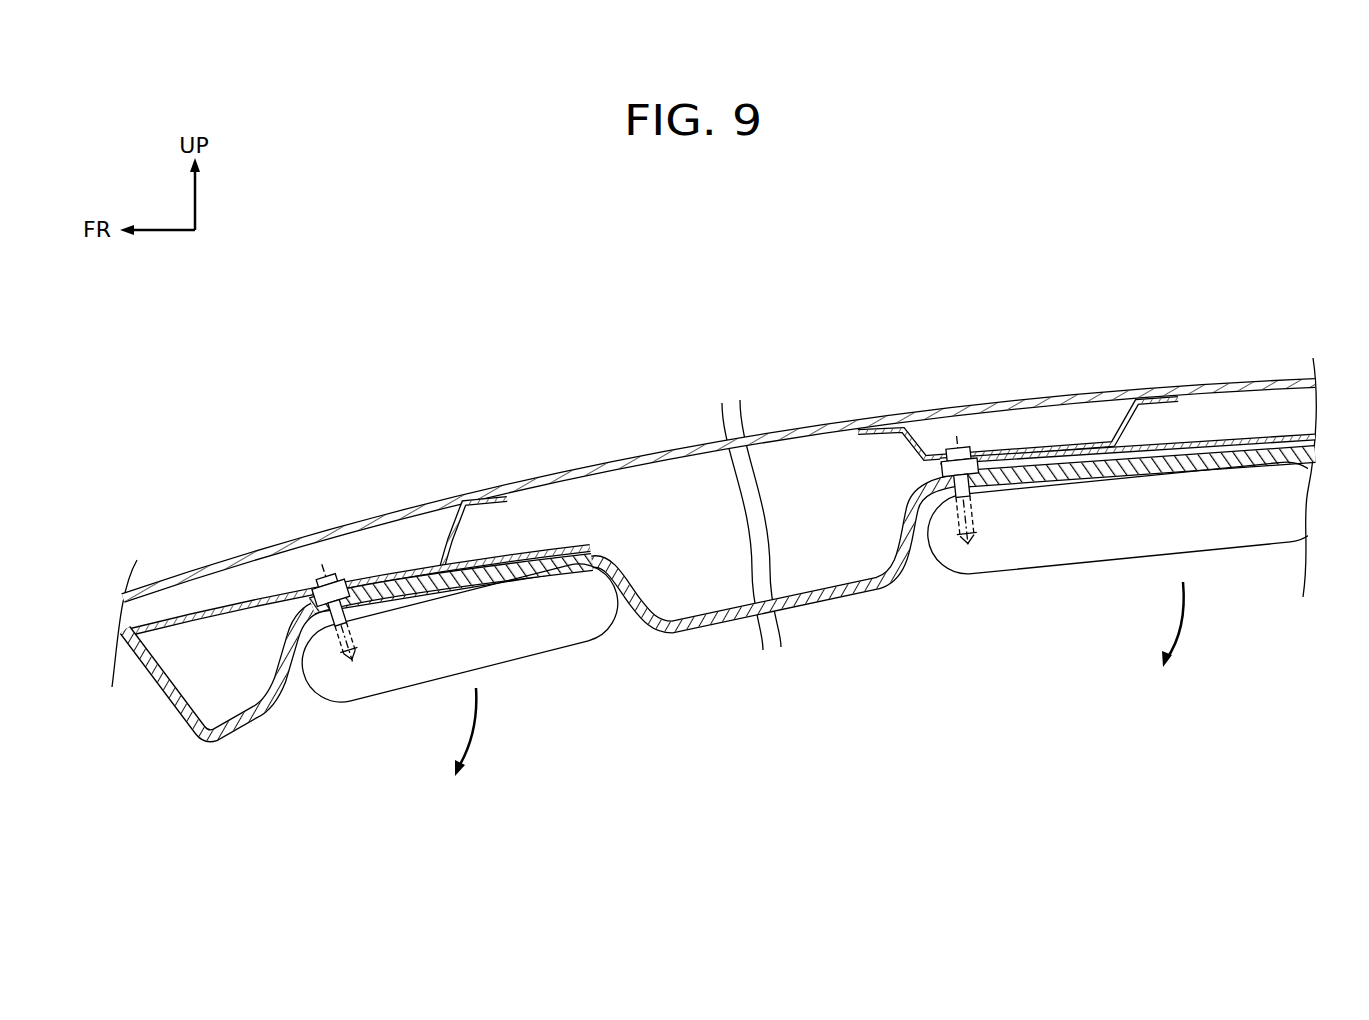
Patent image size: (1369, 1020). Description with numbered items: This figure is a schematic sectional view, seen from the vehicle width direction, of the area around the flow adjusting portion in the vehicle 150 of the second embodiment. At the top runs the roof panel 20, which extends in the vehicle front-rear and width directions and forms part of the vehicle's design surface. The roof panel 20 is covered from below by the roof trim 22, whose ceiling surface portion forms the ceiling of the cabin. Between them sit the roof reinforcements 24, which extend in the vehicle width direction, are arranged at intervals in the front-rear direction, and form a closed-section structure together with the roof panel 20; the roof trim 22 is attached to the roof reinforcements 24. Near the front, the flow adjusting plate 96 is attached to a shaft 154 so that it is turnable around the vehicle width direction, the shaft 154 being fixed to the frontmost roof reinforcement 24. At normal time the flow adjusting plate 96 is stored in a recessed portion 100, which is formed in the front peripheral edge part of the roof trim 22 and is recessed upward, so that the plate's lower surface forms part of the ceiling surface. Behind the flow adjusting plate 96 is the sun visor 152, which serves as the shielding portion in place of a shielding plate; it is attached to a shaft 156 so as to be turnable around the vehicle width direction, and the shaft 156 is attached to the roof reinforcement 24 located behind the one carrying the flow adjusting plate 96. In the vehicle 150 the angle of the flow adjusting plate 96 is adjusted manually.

The vehicle 150 is at (1000, 272).
The roof panel 20 is at (1053, 390).
The roof trim 22 is at (702, 625).
The roof reinforcement 24 is at (153, 623).
The flow adjusting plate 96 is at (547, 652).
The recessed portion 100 is at (548, 553).
The sun visor 152 is at (1090, 560).
The shaft 154 is at (343, 640).
The shaft 156 is at (975, 516).